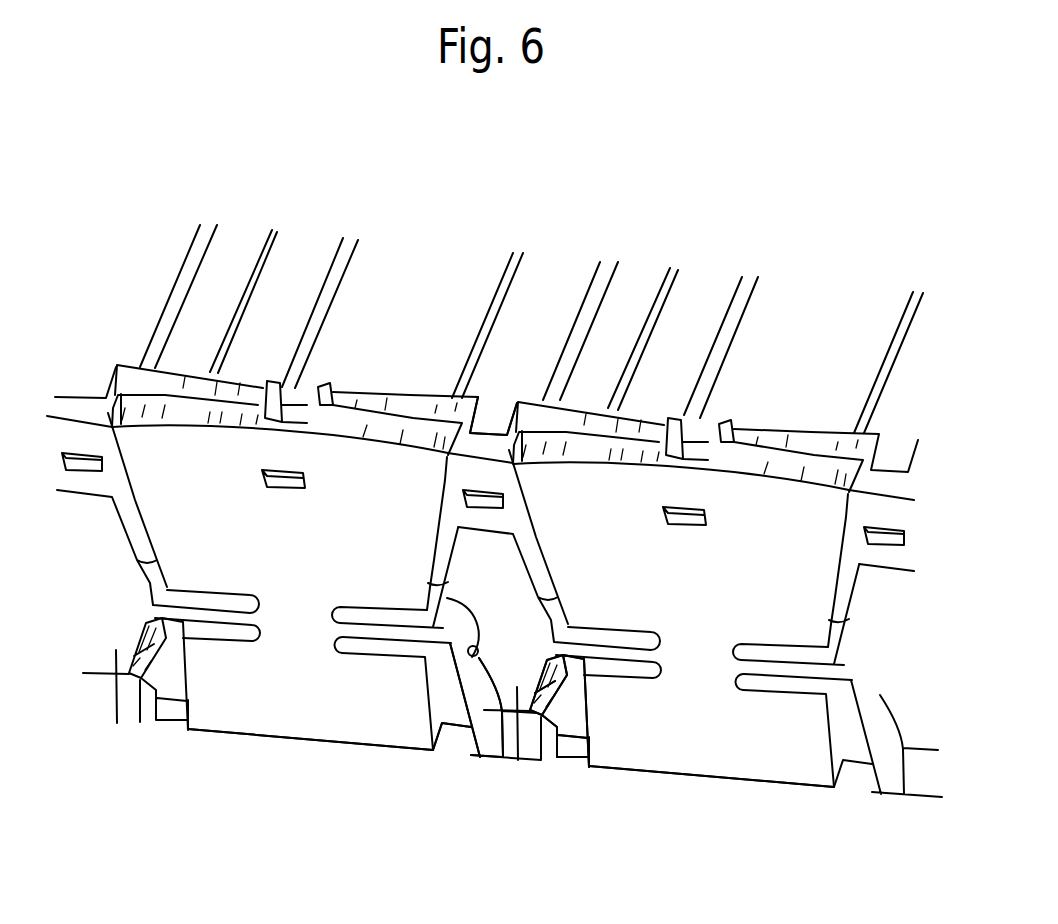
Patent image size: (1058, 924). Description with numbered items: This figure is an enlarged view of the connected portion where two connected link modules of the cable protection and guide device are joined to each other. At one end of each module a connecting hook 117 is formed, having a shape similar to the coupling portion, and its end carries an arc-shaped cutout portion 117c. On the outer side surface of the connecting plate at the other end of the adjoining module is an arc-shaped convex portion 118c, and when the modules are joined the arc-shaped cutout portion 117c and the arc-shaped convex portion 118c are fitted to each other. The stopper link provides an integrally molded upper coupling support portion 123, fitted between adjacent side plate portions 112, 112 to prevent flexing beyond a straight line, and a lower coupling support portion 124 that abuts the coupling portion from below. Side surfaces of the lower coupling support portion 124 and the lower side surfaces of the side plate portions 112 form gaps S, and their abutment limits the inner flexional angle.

The side plate portion 112 is at (265, 712).
The connecting hook 117 is at (513, 723).
The arc-shaped cutout portion 117c is at (502, 745).
The arc-shaped convex portion 118c is at (452, 635).
The upper coupling support portion 123 is at (467, 470).
The lower coupling support portion 124 is at (493, 745).
The gap S is at (453, 738).